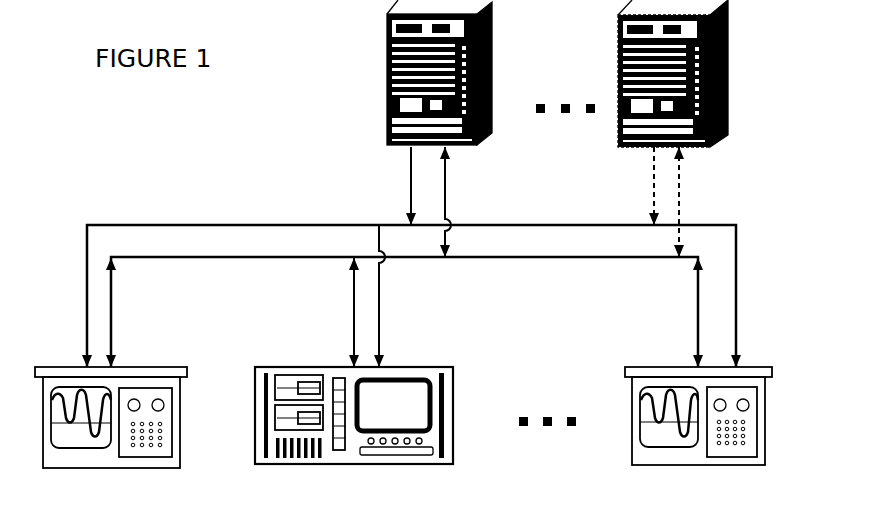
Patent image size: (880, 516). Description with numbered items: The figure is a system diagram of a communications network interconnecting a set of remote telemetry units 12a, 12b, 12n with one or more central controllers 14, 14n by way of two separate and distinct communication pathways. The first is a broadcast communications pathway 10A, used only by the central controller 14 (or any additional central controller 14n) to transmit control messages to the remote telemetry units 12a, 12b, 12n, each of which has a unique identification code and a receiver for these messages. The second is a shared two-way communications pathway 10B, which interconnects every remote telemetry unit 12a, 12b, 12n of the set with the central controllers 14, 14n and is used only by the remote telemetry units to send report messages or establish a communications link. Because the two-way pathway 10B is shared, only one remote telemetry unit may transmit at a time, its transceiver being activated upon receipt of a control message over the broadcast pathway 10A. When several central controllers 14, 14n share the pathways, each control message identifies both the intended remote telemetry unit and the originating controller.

The broadcast communications pathway 10A is at (185, 225).
The shared two-way communications pathway 10B is at (312, 257).
The central controller 14 is at (386, 72).
The central controller 14n is at (717, 72).
The remote telemetry unit 12a is at (111, 426).
The remote telemetry unit 12b is at (354, 426).
The remote telemetry unit 12n is at (698, 426).